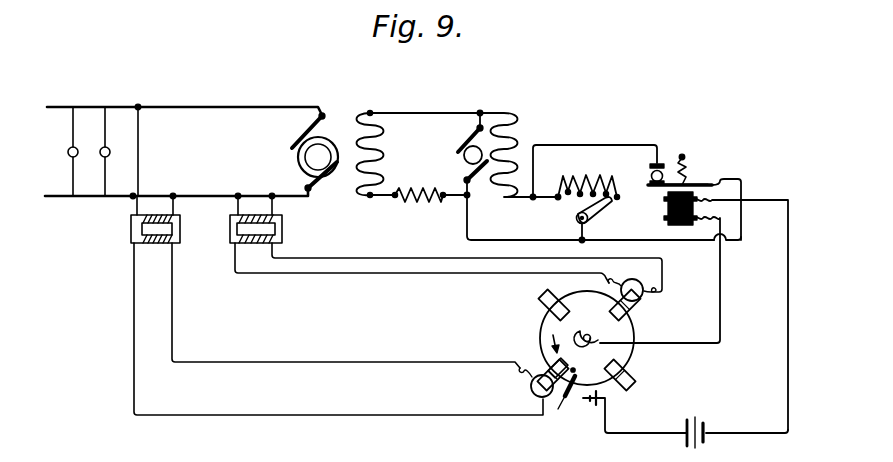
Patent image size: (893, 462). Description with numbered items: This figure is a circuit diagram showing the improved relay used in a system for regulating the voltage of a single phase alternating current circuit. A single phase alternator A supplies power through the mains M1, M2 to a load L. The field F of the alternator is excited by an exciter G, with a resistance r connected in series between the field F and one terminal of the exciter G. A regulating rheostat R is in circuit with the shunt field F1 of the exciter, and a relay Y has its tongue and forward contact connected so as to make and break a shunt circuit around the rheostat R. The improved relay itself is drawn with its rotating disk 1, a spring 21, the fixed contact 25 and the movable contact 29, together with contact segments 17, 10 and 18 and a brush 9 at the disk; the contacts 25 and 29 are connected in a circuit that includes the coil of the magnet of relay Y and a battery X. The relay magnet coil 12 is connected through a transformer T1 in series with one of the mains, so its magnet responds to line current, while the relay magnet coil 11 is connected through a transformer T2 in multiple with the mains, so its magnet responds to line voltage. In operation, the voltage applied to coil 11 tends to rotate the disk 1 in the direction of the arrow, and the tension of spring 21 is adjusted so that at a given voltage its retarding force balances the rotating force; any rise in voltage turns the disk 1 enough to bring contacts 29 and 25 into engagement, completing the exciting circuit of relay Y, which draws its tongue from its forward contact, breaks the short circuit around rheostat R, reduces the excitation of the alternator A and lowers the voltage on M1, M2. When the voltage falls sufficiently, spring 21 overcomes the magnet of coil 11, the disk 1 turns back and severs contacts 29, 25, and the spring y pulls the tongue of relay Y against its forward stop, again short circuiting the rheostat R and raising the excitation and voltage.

The load L is at (104, 150).
The main M1 is at (208, 107).
The main M2 is at (192, 196).
The single phase alternator A is at (304, 152).
The transformer T1 is at (292, 232).
The transformer T2 is at (178, 246).
The field F is at (382, 162).
The resistance r is at (420, 206).
The exciter G is at (457, 163).
The shunt field F1 is at (518, 135).
The regulating rheostat R is at (612, 180).
The relay Y is at (672, 168).
The spring y is at (688, 178).
The disk 1 is at (541, 337).
The spring 21 is at (598, 341).
The contact segment 17 is at (543, 301).
The contact segment 10 is at (613, 302).
The relay magnet coil 12 is at (640, 310).
The contact segment 18 is at (637, 378).
The relay magnet coil 11 is at (530, 389).
The brush 9 is at (568, 367).
The movable contact 29 is at (561, 406).
The fixed contact 25 is at (596, 407).
The battery X is at (706, 427).